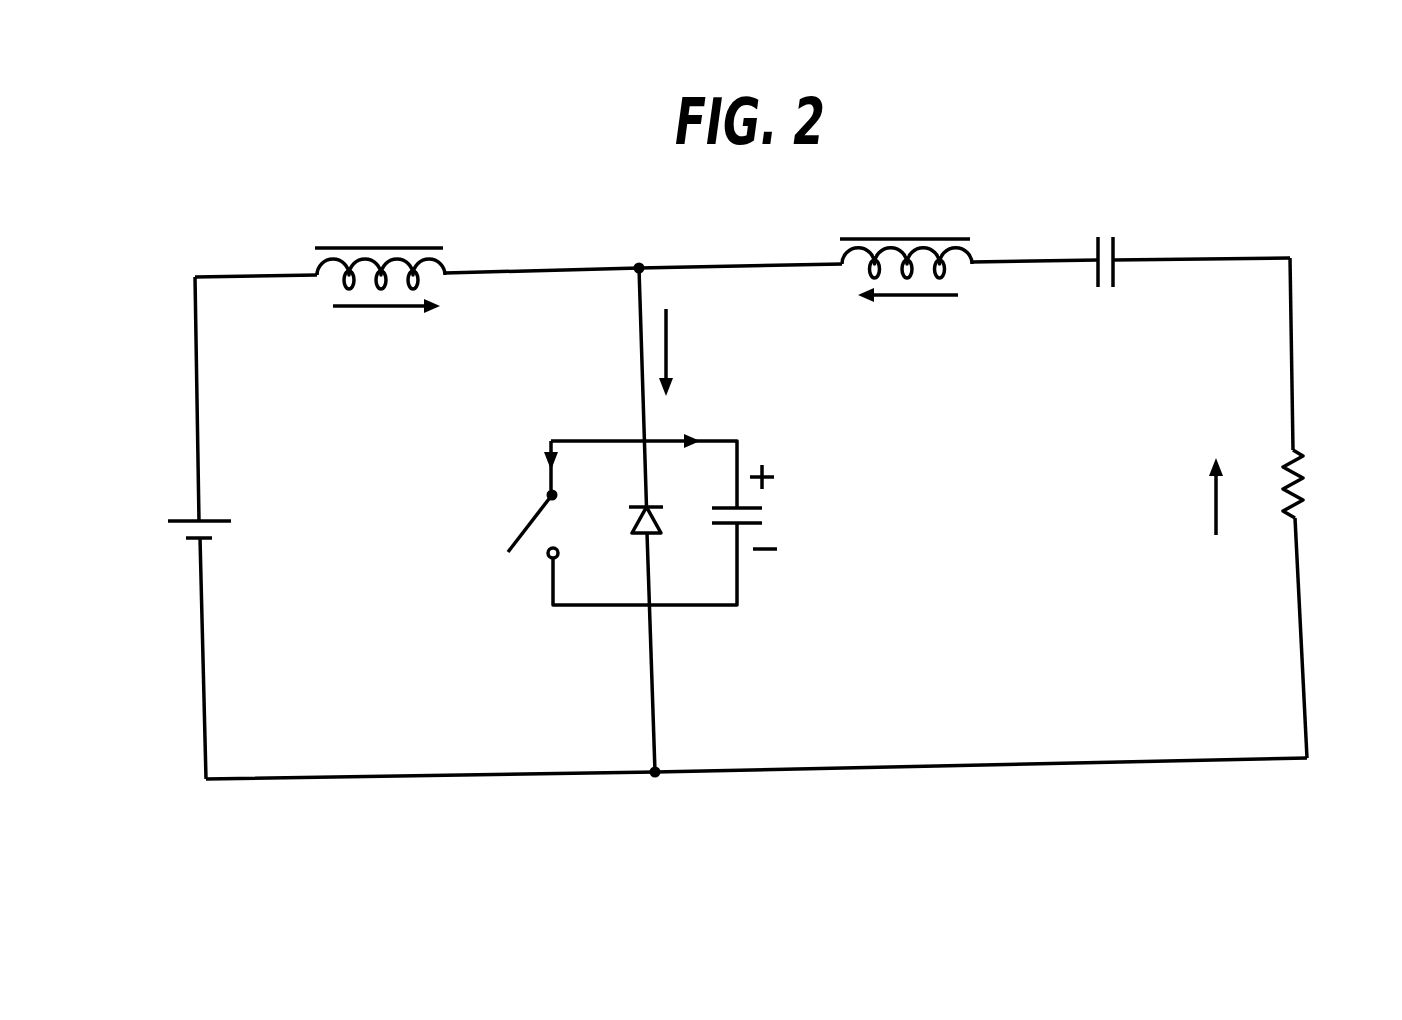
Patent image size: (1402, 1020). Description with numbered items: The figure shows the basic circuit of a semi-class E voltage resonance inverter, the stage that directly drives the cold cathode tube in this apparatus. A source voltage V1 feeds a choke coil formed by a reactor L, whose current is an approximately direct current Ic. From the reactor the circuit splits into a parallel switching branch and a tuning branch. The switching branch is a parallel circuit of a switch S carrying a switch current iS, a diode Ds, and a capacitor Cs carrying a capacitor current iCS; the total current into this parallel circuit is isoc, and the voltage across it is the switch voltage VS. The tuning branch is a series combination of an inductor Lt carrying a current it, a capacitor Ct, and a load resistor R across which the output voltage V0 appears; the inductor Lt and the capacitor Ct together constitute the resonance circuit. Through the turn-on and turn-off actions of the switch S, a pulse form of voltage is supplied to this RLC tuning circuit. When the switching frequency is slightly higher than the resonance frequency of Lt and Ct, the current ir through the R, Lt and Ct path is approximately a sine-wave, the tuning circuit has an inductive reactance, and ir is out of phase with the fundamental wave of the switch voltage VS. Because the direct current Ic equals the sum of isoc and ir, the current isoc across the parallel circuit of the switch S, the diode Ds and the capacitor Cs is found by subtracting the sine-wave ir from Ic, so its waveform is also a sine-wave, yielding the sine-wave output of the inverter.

The reactor L is at (380, 241).
The direct current Ic is at (386, 330).
The inductor Lt is at (906, 232).
The tank current it is at (908, 320).
The capacitor Ct is at (1102, 233).
The source voltage V1 is at (171, 525).
The switch S is at (515, 536).
The switch current iS is at (529, 433).
The diode Ds is at (615, 520).
The switch-circuit current isoc is at (701, 352).
The capacitor current iCS is at (734, 415).
The capacitor Cs is at (723, 542).
The switch voltage VS is at (783, 507).
The load current ir is at (1195, 496).
The load resistor R is at (1269, 484).
The output voltage V0 is at (1347, 490).